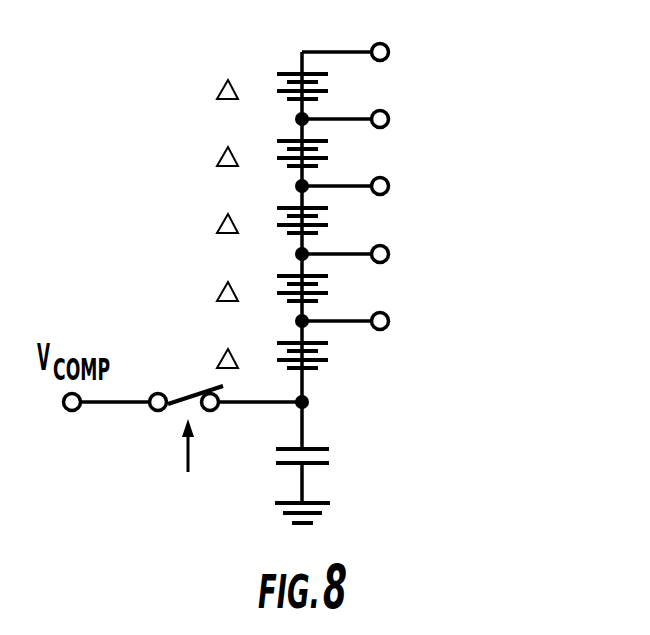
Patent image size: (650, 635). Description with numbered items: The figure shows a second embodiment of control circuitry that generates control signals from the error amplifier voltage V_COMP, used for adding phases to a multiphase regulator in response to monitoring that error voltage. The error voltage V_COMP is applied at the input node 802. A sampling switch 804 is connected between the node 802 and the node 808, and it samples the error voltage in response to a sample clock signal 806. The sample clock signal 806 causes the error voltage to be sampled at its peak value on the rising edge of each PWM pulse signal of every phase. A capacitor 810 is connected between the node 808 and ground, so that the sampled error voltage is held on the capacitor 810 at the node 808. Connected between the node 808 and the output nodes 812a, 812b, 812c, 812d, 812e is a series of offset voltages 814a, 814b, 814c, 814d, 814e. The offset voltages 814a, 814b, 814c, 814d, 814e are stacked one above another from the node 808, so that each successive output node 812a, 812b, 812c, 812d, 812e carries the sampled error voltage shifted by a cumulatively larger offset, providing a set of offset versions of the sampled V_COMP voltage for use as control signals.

The node 802 is at (73, 411).
The sampling switch 804 is at (162, 392).
The sample clock signal 806 is at (170, 535).
The node 808 is at (308, 400).
The capacitor 810 is at (380, 468).
The node 812a is at (384, 43).
The node 812b is at (384, 110).
The node 812c is at (384, 177).
The node 812d is at (384, 245).
The node 812e is at (384, 312).
The offset voltage 814a is at (222, 86).
The offset voltage 814b is at (222, 153).
The offset voltage 814c is at (222, 221).
The offset voltage 814d is at (222, 289).
The offset voltage 814e is at (220, 360).